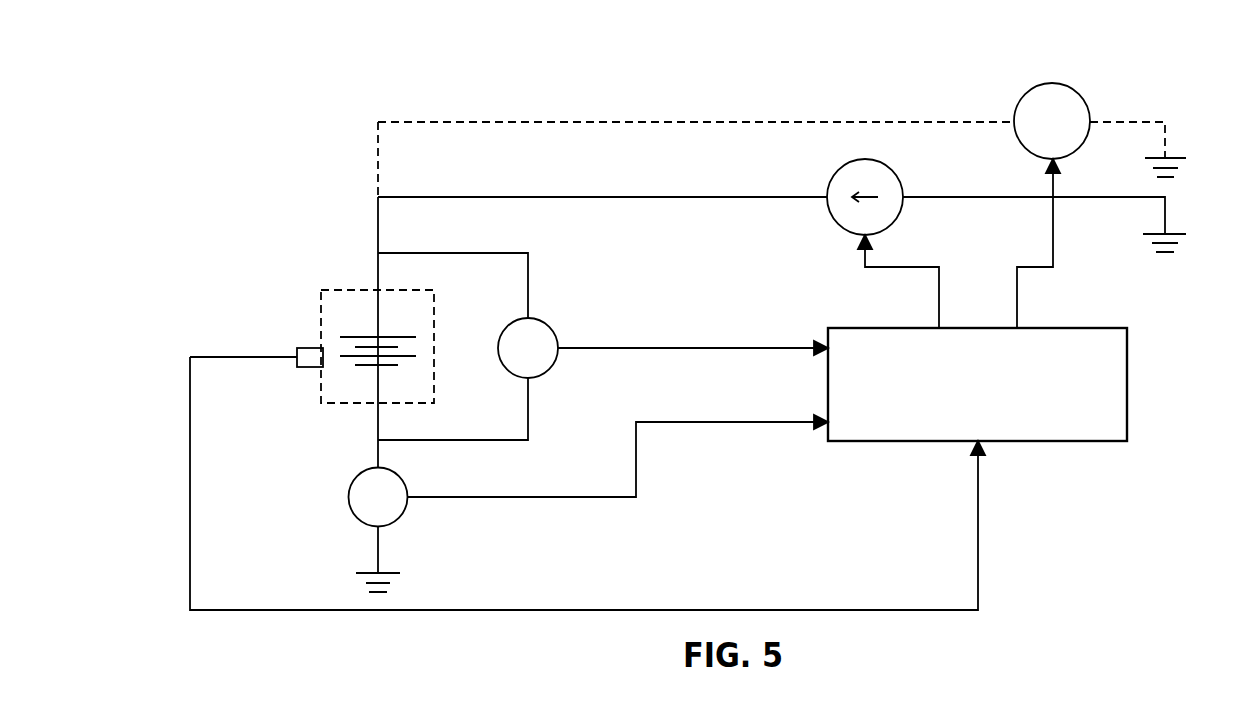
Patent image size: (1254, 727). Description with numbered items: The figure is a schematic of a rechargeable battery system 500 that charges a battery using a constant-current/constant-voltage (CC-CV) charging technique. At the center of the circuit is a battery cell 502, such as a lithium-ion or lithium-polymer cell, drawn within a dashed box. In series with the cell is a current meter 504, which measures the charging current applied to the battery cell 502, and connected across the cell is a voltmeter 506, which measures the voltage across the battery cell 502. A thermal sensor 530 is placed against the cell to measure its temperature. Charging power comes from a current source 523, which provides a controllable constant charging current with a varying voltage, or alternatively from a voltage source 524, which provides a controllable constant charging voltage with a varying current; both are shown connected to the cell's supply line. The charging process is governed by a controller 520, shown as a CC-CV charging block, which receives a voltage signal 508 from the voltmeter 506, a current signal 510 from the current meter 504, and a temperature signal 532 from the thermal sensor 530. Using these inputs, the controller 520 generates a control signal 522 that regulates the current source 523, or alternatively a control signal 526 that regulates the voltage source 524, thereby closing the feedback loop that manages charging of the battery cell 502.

The rechargeable battery system 500 is at (697, 76).
The battery cell 502 is at (340, 289).
The current meter 504 is at (352, 477).
The voltmeter 506 is at (537, 318).
The voltage signal 508 is at (693, 339).
The current signal 510 is at (618, 456).
The controller 520 is at (977, 384).
The control signal 522 is at (903, 266).
The current source 523 is at (828, 183).
The voltage source 524 is at (1067, 87).
The control signal 526 is at (1053, 235).
The thermal sensor 530 is at (307, 347).
The temperature signal 532 is at (587, 483).